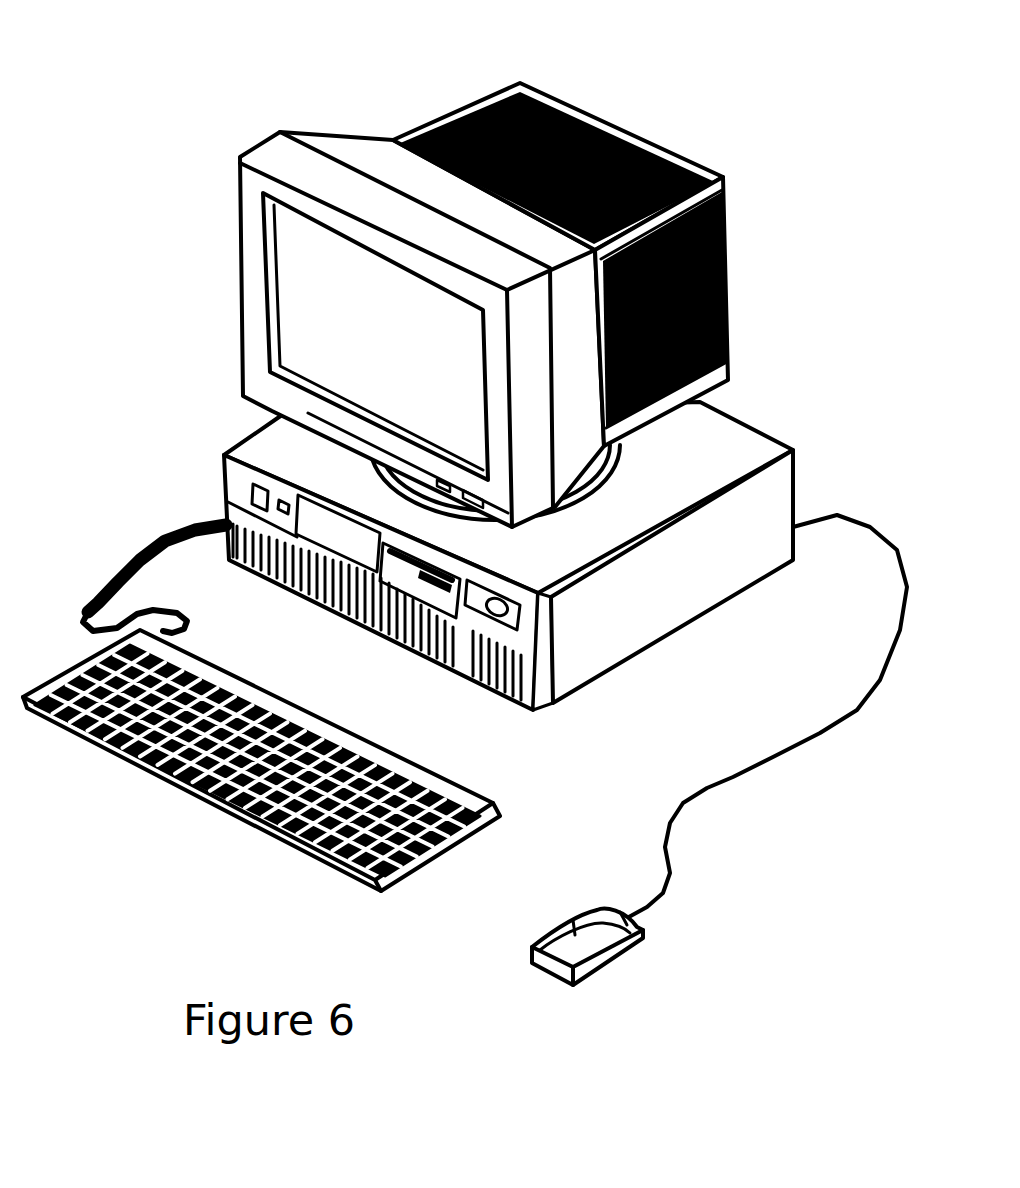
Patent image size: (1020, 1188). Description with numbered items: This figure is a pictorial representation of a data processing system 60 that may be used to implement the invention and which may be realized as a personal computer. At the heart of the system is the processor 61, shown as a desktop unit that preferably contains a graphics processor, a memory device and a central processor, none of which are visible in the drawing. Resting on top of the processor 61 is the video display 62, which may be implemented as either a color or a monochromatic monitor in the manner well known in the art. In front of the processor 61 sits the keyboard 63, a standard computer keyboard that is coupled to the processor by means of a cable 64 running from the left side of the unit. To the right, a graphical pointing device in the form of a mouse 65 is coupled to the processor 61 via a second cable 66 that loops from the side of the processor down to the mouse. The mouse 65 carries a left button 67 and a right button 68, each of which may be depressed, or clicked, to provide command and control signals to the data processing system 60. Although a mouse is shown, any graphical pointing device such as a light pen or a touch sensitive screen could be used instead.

The data processing system 60 is at (857, 53).
The processor 61 is at (222, 497).
The video display 62 is at (240, 310).
The keyboard 63 is at (202, 803).
The cable 64 is at (122, 581).
The mouse 65 is at (610, 970).
The cable 66 is at (713, 790).
The left button 67 is at (582, 907).
The right button 68 is at (647, 930).